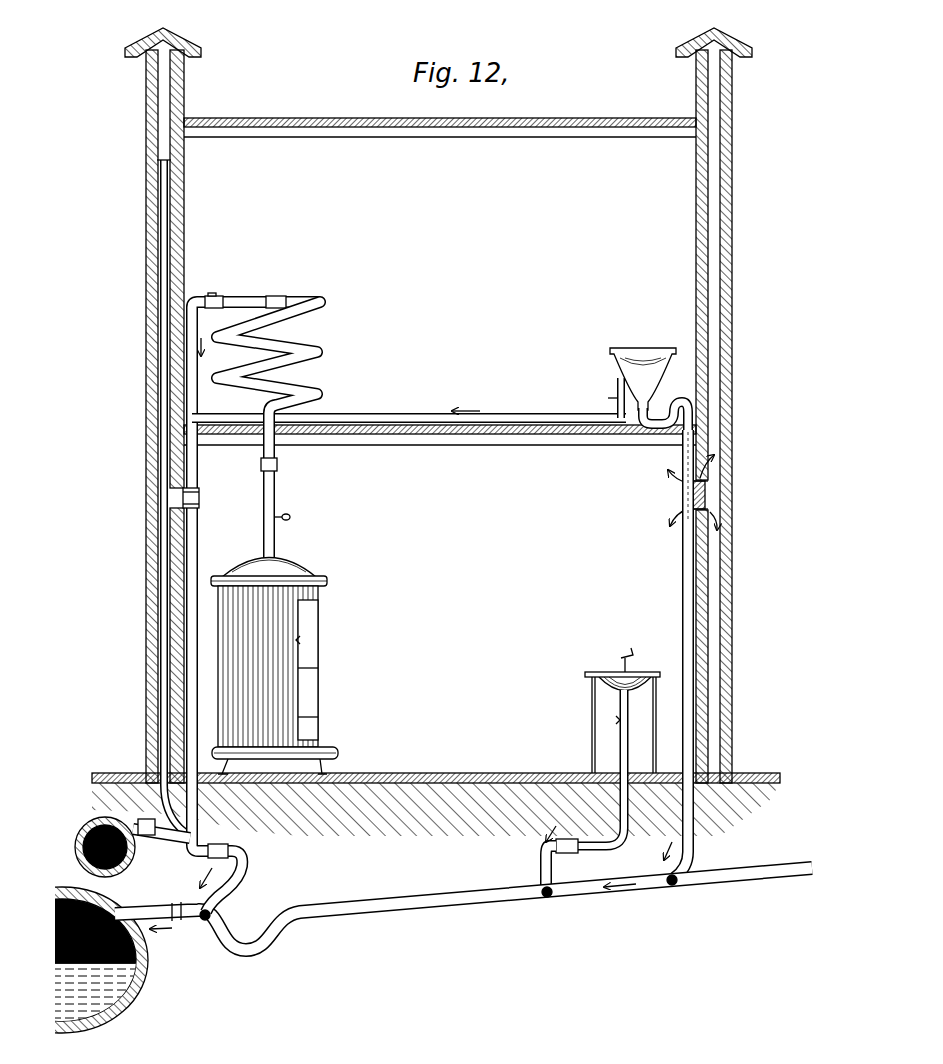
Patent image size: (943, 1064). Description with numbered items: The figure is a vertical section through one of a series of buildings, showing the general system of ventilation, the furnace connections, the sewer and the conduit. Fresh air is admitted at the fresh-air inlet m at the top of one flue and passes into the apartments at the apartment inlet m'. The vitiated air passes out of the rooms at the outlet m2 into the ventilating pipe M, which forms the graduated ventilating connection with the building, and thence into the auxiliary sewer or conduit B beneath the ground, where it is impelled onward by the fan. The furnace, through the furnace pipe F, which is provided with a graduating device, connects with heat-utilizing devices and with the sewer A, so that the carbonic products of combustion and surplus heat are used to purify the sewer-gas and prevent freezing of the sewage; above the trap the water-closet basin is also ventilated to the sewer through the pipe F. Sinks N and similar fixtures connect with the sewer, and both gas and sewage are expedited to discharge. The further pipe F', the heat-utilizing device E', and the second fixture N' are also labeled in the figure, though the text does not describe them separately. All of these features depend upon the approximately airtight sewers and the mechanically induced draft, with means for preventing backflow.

The fresh-air inlet m is at (716, 405).
The upper sink N' is at (638, 389).
The vitiated-air outlet m2 is at (199, 492).
The furnace pipe F is at (268, 431).
The circulation pipe F' is at (252, 566).
The heater E' is at (277, 666).
The ventilating-connection pipe M is at (150, 636).
The apartment air inlet m' is at (687, 492).
The sink N is at (603, 769).
The auxiliary sewer B is at (80, 838).
The sewer A is at (147, 968).